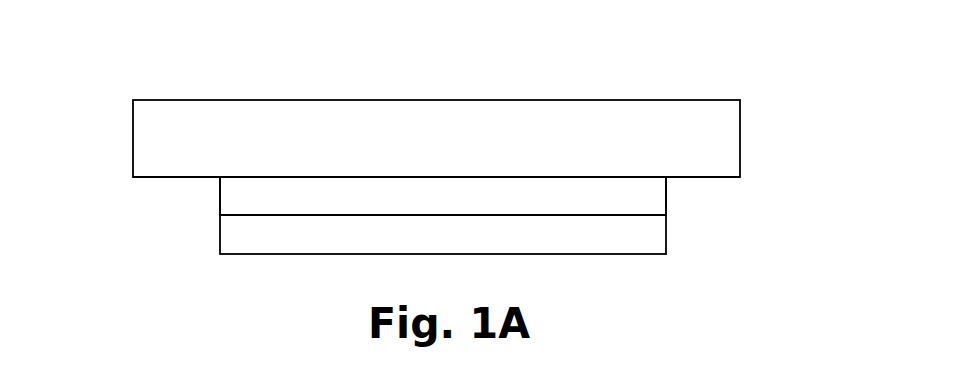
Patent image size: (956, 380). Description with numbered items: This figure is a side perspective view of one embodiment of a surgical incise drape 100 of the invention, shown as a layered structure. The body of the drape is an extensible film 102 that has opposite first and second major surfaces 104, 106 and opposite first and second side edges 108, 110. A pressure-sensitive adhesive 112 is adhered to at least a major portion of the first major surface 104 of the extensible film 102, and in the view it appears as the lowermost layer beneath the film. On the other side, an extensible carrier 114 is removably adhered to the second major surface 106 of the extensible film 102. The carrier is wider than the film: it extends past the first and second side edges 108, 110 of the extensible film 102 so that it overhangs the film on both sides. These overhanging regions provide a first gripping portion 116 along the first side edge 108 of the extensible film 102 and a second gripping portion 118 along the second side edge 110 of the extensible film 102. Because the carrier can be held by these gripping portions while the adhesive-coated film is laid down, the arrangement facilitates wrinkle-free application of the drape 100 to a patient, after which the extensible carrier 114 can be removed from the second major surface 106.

The surgical incise drape 100 is at (703, 58).
The extensible film 102 is at (450, 206).
The first major surface 104 is at (623, 220).
The second major surface 106 is at (589, 174).
The first side edge 108 is at (670, 199).
The second side edge 110 is at (217, 197).
The pressure-sensitive adhesive 112 is at (450, 246).
The extensible carrier 114 is at (446, 152).
The first gripping portion 116 is at (710, 174).
The second gripping portion 118 is at (172, 174).